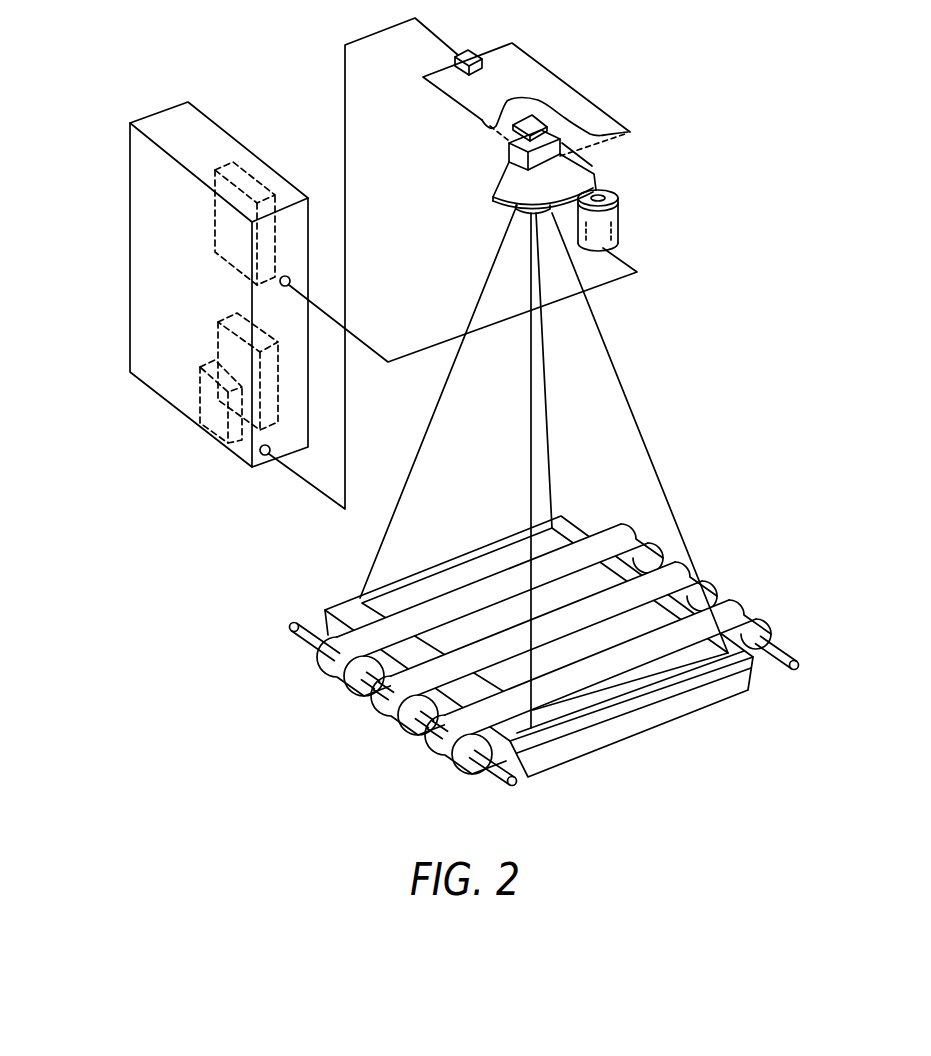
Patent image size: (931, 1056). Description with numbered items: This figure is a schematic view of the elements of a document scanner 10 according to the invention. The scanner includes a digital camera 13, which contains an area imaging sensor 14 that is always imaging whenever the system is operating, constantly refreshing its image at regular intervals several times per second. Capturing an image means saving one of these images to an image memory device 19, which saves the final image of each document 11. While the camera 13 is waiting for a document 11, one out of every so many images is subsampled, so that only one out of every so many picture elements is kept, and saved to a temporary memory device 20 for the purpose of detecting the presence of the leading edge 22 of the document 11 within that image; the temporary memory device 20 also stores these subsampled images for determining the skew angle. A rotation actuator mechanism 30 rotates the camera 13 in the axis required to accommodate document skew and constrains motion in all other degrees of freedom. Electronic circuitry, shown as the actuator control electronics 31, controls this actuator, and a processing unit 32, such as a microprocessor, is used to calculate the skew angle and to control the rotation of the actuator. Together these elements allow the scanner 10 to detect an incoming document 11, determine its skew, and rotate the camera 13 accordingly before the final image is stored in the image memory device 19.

The document scanner 10 is at (787, 45).
The document 11 is at (588, 678).
The digital camera 13 is at (643, 35).
The imaging sensor 14 is at (510, 127).
The image memory device 19 is at (217, 339).
The temporary memory device 20 is at (200, 397).
The leading edge 22 is at (415, 589).
The rotation actuator mechanism 30 is at (678, 155).
The actuator control electronics 31 is at (213, 215).
The processing unit 32 is at (87, 82).